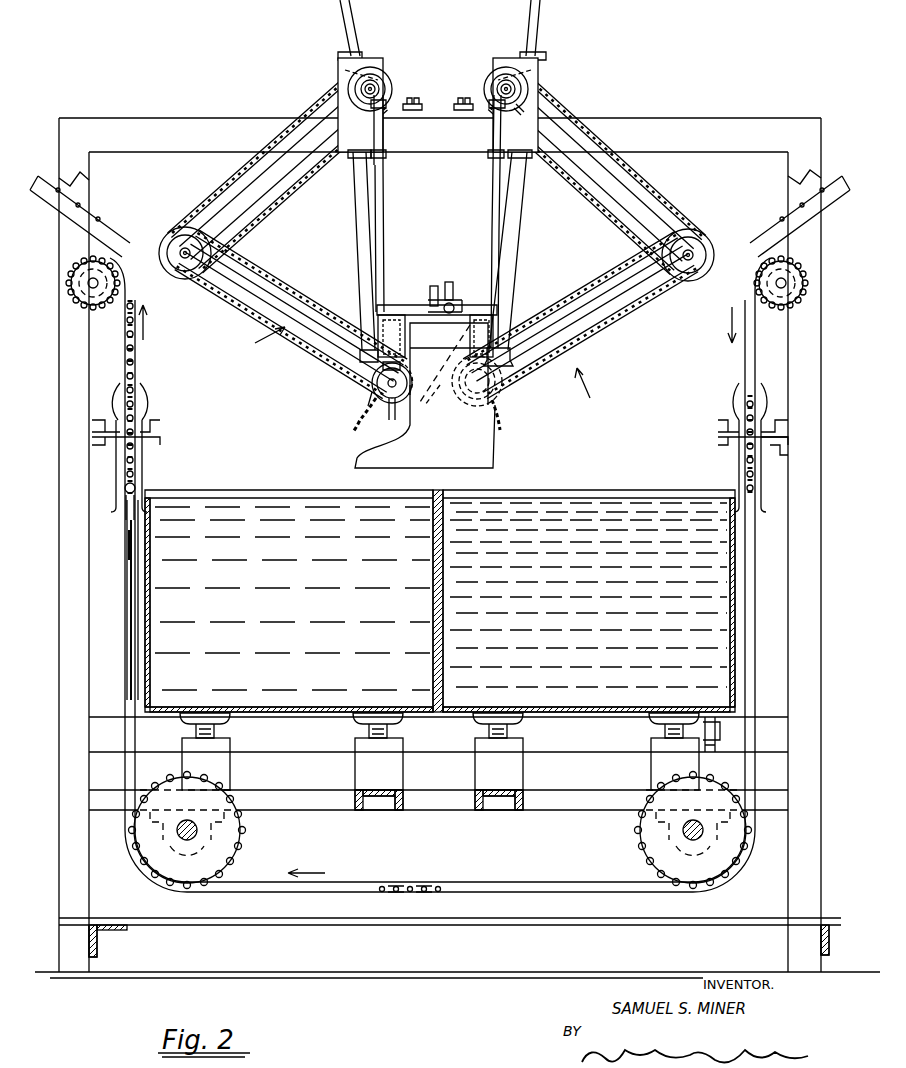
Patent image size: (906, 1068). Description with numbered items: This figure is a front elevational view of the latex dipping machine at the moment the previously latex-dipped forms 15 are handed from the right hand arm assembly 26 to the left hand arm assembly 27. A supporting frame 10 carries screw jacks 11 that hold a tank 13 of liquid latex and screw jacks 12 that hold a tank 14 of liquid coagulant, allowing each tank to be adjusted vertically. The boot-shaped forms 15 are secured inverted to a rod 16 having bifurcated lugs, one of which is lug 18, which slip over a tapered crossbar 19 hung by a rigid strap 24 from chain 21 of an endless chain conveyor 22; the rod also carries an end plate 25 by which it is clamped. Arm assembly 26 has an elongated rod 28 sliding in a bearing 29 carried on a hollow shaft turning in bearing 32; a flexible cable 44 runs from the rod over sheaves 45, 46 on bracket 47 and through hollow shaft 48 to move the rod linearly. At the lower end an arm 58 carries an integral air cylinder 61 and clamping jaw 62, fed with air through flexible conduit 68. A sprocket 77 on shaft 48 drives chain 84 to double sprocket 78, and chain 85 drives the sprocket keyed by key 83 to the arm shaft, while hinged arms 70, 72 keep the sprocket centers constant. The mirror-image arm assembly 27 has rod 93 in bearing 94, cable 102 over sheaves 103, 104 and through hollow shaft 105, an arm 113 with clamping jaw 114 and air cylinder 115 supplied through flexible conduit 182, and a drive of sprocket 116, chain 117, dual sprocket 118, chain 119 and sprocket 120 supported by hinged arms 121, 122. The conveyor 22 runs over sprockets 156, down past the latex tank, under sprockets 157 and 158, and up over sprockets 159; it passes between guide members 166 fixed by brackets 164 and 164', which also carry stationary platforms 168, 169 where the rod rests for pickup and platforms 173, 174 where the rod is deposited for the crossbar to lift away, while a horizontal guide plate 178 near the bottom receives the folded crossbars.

The supporting frame 10 is at (343, 812).
The screw jacks 11 is at (651, 758).
The screw jacks 12 is at (229, 765).
The tank of liquid latex 13 is at (626, 472).
The tank of liquid coagulant 14 is at (228, 470).
The dipping forms 15 is at (496, 446).
The rod 16 is at (424, 352).
The bifurcated lug 18 is at (447, 284).
The tapered crossbars 19 is at (138, 604).
The chain 21 is at (138, 636).
The endless chain conveyor 22 is at (769, 591).
The rigid strap 24 is at (140, 579).
The transversely extending plate 25 is at (432, 288).
The arm assembly 26 is at (590, 395).
The second arm assembly 27 is at (212, 337).
The elongated rod 28 is at (518, 222).
The bearing 29 is at (543, 63).
The bearing 32 is at (478, 100).
The flexible cable 44 is at (491, 247).
The sheave 45 is at (493, 172).
The sheave 46 is at (524, 108).
The bracket 47 is at (491, 135).
The hollow shaft 48 is at (516, 90).
The arm 58 is at (512, 345).
The air cylinder 61 is at (400, 410).
The clamping jaw 62 is at (482, 314).
The flexible conduit 68 is at (503, 418).
The arm 70 is at (596, 328).
The second arm 72 is at (660, 210).
The sprocket 77 is at (505, 66).
The double sprocket 78 is at (714, 253).
The key 83 is at (444, 414).
The chain 84 is at (650, 189).
The chain 85 is at (640, 306).
The elongated rod 93 is at (357, 207).
The bearing 94 is at (338, 70).
The flexible cable 102 is at (386, 222).
The sheave 103 is at (386, 166).
The sheave 104 is at (360, 95).
The hollow shaft 105 is at (392, 74).
The arm 113 is at (378, 386).
The clamping jaw 114 is at (388, 303).
The air cylinder 115 is at (382, 367).
The sprocket 116 is at (352, 57).
The chain 117 is at (219, 191).
The dual sprocket 118 is at (163, 250).
The chain 119 is at (228, 304).
The sprocket 120 is at (370, 408).
The hinged arm 121 is at (315, 309).
The hinged arm 122 is at (242, 197).
The sprockets 156 is at (760, 256).
The sprocket 157 is at (641, 848).
The sprocket 158 is at (160, 876).
The sprockets 159 is at (120, 290).
The bracket 164 is at (799, 470).
The bracket 164' is at (144, 443).
The guide members 166 is at (140, 483).
The stationary platform 168 is at (730, 420).
The stationary platform 169 is at (770, 414).
The platform 173 is at (135, 368).
The platform 174 is at (150, 414).
The horizontal guide plate 178 is at (306, 920).
The flexible conduit 182 is at (362, 428).